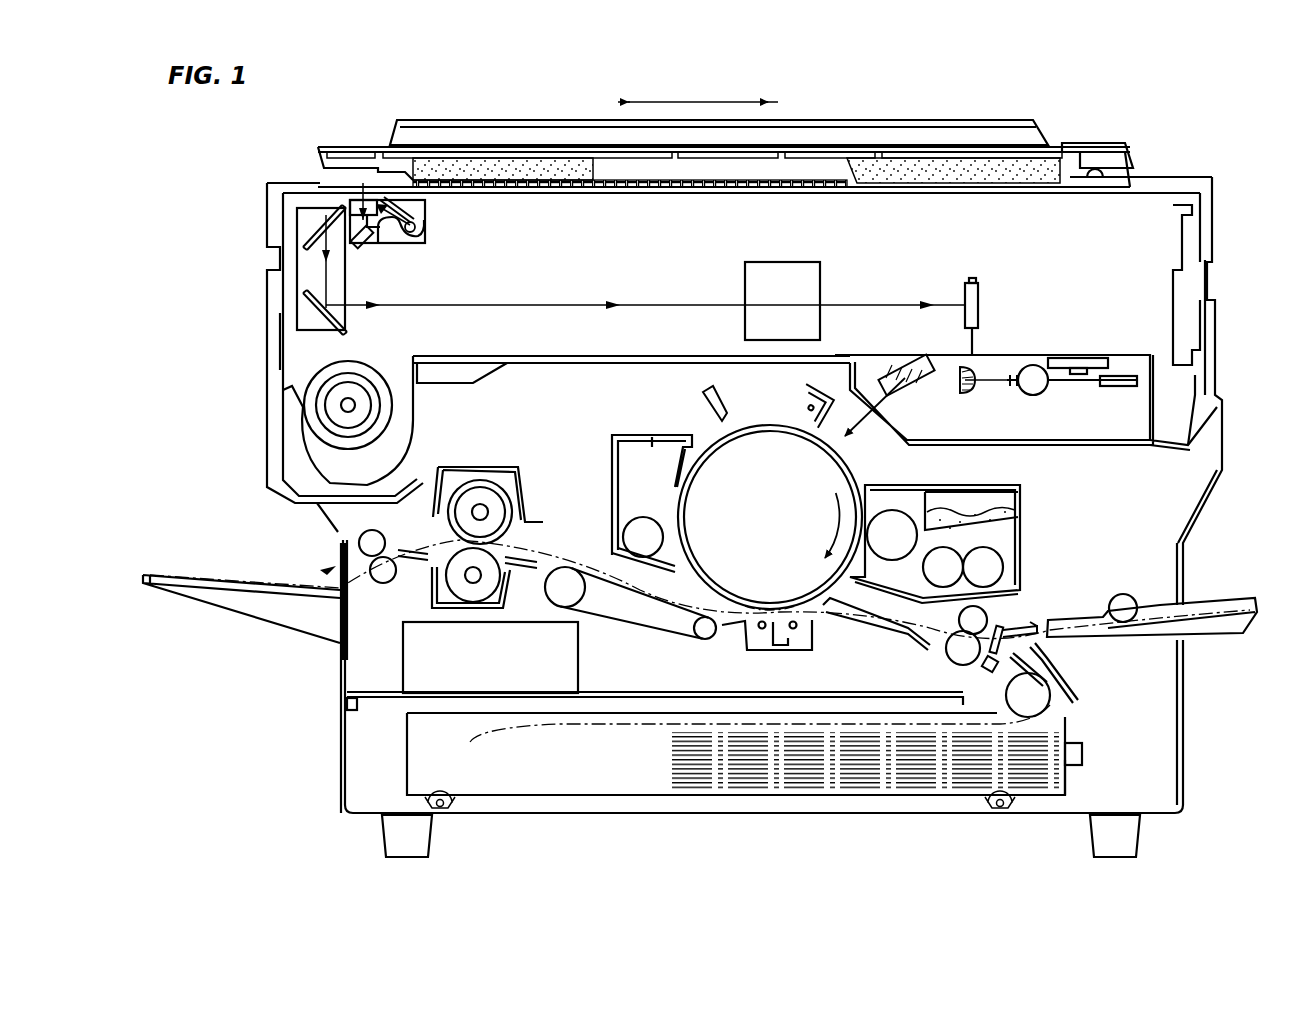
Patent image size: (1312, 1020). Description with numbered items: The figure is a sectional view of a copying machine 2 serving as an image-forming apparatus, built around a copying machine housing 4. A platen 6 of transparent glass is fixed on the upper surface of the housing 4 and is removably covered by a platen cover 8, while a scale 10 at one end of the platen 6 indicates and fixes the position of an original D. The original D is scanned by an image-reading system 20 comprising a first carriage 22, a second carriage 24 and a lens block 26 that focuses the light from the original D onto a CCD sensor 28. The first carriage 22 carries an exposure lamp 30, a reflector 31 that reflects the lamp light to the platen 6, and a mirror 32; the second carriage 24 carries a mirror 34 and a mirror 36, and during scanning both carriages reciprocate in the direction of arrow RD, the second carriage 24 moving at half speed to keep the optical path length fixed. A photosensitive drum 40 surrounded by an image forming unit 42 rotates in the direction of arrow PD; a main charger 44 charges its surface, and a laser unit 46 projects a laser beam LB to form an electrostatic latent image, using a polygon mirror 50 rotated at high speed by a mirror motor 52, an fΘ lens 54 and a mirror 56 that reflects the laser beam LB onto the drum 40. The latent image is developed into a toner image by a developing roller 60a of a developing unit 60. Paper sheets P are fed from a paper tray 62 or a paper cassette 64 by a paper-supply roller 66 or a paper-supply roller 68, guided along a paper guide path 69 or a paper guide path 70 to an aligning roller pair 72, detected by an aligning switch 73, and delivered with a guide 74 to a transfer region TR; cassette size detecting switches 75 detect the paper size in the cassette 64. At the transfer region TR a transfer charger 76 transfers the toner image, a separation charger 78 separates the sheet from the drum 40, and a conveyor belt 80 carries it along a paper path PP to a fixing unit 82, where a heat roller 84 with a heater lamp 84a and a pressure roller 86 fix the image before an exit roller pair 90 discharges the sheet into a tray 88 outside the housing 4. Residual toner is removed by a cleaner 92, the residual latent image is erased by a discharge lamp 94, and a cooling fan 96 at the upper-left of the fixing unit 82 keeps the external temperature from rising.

The copying machine 2 is at (1160, 168).
The copying machine housing 4 is at (1224, 460).
The platen 6 is at (688, 193).
The platen cover 8 is at (900, 122).
The scale 10 is at (363, 183).
The image-reading system 20 is at (932, 242).
The first carriage 22 is at (421, 251).
The second carriage 24 is at (306, 204).
The lens block 26 is at (818, 282).
The CCD sensor 28 is at (978, 301).
The exposure lamp 30 is at (400, 208).
The reflector 31 is at (418, 227).
The mirror 32 is at (368, 246).
The mirror 34 is at (305, 224).
The mirror 36 is at (305, 300).
The photosensitive drum 40 is at (754, 426).
The image forming unit 42 is at (1042, 507).
The main charger 44 is at (805, 393).
The laser unit 46 is at (1064, 349).
The polygon mirror 50 is at (1100, 388).
The mirror motor 52 is at (1035, 396).
The fΘ lens 54 is at (970, 395).
The mirror 56 is at (905, 368).
The developing unit 60 is at (1022, 556).
The developing roller 60a is at (892, 528).
The paper tray 62 is at (1233, 600).
The paper cassette 64 is at (1070, 796).
The paper-supply roller 66 is at (1123, 601).
The paper-supply roller 68 is at (1046, 706).
The paper guide path 69 is at (1028, 631).
The paper guide path 70 is at (1076, 677).
The aligning roller pair 72 is at (960, 656).
The aligning switch 73 is at (990, 673).
The guide 74 is at (870, 631).
The cassette size detecting switch 75 is at (1085, 762).
The transfer charger 76 is at (802, 652).
The separation charger 78 is at (758, 647).
The conveyor belt 80 is at (620, 616).
The fixing unit 82 is at (458, 494).
The heat roller 84 is at (441, 470).
The heater lamp 84a is at (486, 506).
The pressure roller 86 is at (478, 594).
The tray 88 is at (276, 619).
The exit roller pair 90 is at (372, 547).
The cleaner 92 is at (612, 461).
The discharge lamp 94 is at (703, 403).
The cooling fan 96 is at (303, 405).
The original D is at (553, 170).
The arrow RD is at (665, 100).
The laser beam LB is at (893, 396).
The paper sheet P is at (208, 572).
The paper path PP is at (566, 563).
The arrow PD is at (836, 523).
The transfer region TR is at (774, 605).